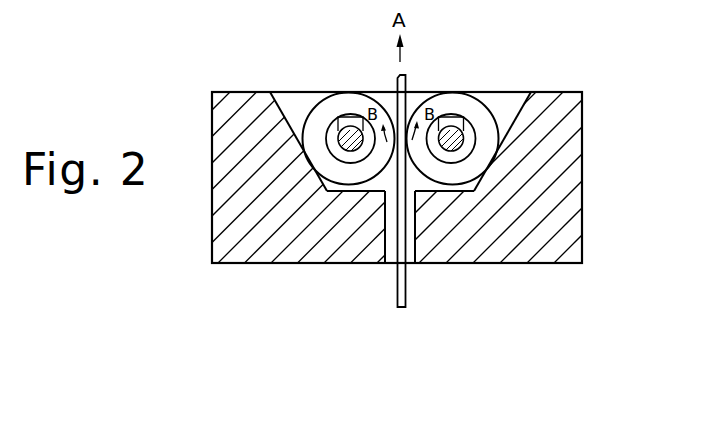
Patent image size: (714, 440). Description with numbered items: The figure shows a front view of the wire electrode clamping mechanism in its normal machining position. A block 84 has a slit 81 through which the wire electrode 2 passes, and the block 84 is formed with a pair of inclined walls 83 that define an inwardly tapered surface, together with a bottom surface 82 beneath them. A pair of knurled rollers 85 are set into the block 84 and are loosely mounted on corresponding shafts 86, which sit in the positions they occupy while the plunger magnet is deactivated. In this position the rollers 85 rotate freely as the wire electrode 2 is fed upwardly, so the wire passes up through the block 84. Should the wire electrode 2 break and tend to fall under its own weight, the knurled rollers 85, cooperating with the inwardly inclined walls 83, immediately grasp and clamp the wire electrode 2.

The wire electrode 2 is at (420, 219).
The slit 81 is at (421, 253).
The bottom surface 82 is at (399, 264).
The inclined walls 83 is at (404, 104).
The block 84 is at (360, 177).
The knurled rollers 85 is at (401, 101).
The shafts 86 is at (404, 90).